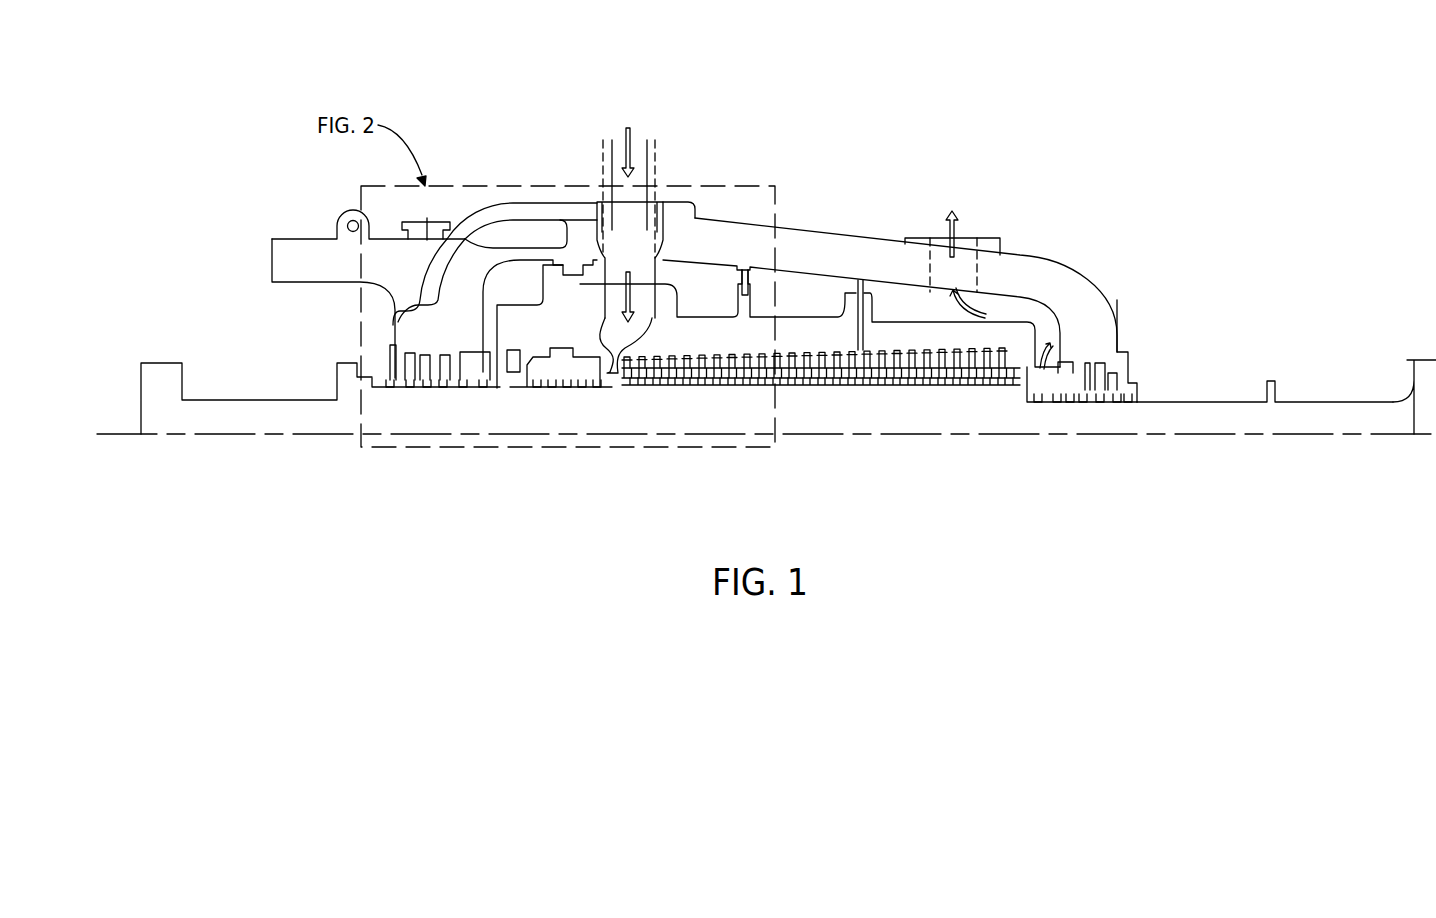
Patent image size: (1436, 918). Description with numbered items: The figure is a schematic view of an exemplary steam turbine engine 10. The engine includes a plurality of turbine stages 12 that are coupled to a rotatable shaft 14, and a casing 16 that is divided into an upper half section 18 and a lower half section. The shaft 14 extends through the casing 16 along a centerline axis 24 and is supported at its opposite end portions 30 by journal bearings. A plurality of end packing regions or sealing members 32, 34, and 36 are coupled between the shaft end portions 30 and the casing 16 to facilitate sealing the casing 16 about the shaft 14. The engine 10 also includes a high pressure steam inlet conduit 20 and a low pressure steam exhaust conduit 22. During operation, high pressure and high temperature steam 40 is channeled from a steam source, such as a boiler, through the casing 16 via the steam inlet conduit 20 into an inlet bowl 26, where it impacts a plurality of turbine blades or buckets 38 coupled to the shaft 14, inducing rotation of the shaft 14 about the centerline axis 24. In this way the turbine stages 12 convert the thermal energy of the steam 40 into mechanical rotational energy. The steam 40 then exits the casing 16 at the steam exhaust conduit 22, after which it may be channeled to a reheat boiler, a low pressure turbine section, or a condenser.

The steam turbine engine 10 is at (990, 78).
The turbine stages 12 is at (733, 397).
The rotatable shaft 14 is at (1318, 390).
The casing 16 is at (1094, 268).
The upper half section 18 is at (1112, 316).
The high pressure steam inlet conduit 20 is at (660, 190).
The low pressure steam exhaust conduit 22 is at (978, 234).
The centerline axis 24 is at (1360, 435).
The inlet bowl 26 is at (612, 390).
The end portions 30 is at (212, 395).
The sealing member 32 is at (445, 405).
The sealing member 34 is at (575, 405).
The sealing member 36 is at (1070, 413).
The turbine blades 38 is at (790, 397).
The steam 40 is at (632, 128).